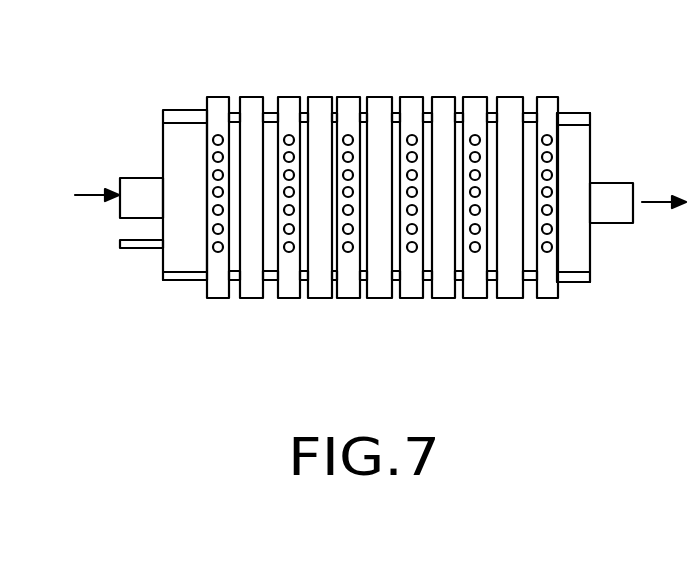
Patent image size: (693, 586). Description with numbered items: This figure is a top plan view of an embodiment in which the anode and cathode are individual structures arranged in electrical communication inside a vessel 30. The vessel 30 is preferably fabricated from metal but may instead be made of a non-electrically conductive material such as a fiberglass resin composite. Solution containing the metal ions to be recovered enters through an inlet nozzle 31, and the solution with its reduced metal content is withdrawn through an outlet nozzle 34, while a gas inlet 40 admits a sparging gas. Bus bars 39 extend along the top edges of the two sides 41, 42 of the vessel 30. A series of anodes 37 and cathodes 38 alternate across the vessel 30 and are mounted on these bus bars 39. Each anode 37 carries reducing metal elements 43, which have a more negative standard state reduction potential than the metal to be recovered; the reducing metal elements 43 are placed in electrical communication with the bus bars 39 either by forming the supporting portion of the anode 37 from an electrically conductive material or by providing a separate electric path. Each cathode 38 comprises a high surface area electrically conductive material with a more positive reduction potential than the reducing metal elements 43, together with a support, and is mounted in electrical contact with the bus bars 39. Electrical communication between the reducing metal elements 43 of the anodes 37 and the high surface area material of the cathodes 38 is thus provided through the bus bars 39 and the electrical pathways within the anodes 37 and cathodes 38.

The vessel 30 is at (593, 142).
The inlet nozzle 31 is at (140, 178).
The outlet nozzle 34 is at (613, 223).
The anode 37 is at (222, 97).
The cathode 38 is at (247, 298).
The bus bar 39 is at (580, 113).
The gas inlet 40 is at (140, 248).
The side of the vessel 41 is at (184, 110).
The side of the vessel 42 is at (182, 280).
The reducing metal element 43 is at (480, 138).